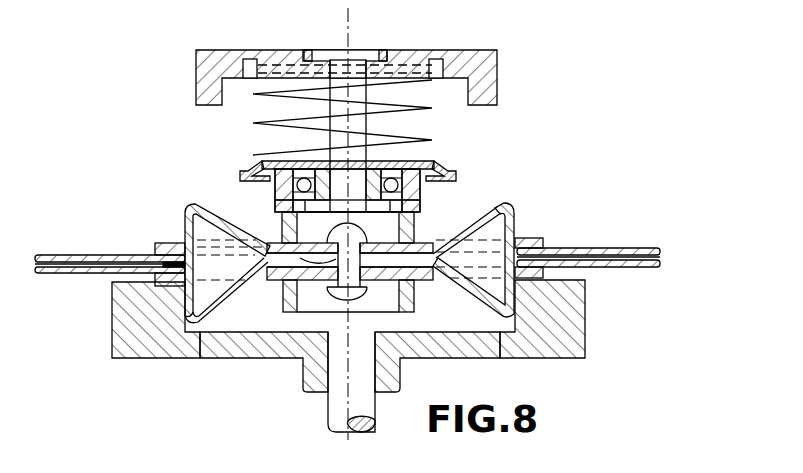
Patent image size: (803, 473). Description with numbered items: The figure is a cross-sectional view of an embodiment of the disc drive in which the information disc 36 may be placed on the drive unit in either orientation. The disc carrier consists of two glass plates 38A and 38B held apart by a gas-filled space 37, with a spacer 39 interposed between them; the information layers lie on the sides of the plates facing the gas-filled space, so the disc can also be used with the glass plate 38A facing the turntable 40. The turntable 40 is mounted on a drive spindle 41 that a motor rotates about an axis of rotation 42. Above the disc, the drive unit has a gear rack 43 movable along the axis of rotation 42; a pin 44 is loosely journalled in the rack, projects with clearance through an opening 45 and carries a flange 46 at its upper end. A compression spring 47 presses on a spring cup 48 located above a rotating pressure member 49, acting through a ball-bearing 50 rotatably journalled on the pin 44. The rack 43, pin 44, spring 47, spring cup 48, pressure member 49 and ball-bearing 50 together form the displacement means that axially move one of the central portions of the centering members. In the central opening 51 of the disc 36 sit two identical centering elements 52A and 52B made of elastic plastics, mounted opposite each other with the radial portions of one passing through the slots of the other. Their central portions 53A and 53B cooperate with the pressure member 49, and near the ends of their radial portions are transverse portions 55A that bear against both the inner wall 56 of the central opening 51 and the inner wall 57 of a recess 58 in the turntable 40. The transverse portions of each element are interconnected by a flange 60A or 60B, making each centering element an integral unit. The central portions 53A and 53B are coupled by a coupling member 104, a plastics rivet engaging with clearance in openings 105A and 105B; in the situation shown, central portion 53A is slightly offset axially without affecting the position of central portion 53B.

The information disc 36 is at (622, 246).
The gas-filled space 37 is at (57, 262).
The glass plate 38A is at (95, 256).
The glass plate 38B is at (92, 273).
The spacer 39 is at (152, 258).
The turntable 40 is at (127, 333).
The drive spindle 41 is at (332, 416).
The axis of rotation 42 is at (352, 27).
The gear rack 43 is at (472, 62).
The pin 44 is at (358, 125).
The opening 45 is at (392, 72).
The flange 46 is at (313, 52).
The compression spring 47 is at (272, 130).
The spring cup 48 is at (447, 176).
The pressure member 49 is at (412, 190).
The ball-bearing 50 is at (282, 196).
The central opening 51 is at (512, 208).
The centering element 52A is at (200, 328).
The centering element 52B is at (199, 200).
The central portion 53A is at (413, 216).
The central portion 53B is at (418, 295).
The transverse portions 55A is at (196, 257).
The inner wall 56 is at (540, 243).
The inner wall 57 is at (513, 330).
The recess 58 is at (486, 326).
The flange 60A is at (167, 243).
The flange 60B is at (167, 288).
The coupling member 104 is at (333, 293).
The opening 105A is at (282, 246).
The opening 105B is at (380, 282).